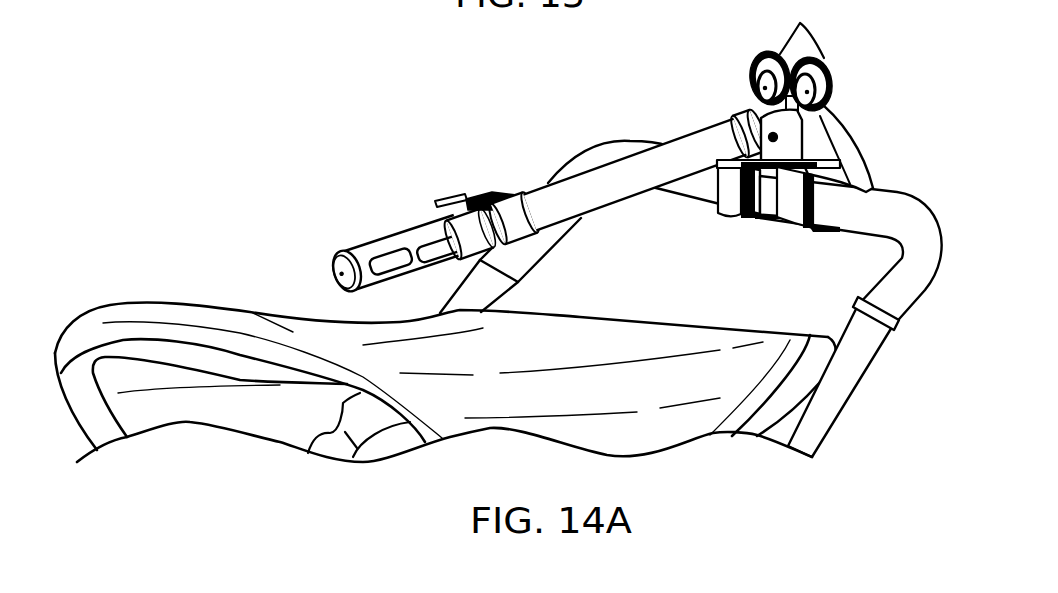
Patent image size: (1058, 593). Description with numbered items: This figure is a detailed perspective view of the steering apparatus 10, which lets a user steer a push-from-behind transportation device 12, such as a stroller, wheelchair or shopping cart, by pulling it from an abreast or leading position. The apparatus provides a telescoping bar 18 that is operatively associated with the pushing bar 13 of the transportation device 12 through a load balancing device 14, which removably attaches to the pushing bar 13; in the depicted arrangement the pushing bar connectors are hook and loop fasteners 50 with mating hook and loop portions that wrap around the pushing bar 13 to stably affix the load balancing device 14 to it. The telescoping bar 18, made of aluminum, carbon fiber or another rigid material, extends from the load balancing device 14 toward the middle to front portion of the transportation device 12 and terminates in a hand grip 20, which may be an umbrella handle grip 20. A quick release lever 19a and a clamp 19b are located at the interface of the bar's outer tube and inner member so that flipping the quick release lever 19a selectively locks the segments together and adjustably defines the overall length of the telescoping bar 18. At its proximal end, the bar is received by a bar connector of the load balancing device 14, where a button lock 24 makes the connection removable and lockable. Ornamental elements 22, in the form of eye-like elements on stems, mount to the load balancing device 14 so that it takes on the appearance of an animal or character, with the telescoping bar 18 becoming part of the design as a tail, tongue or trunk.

The steering apparatus 10 is at (335, 165).
The push-from-behind transportation device 12 is at (134, 286).
The pushing bar 13 is at (901, 205).
The load balancing device 14 is at (850, 150).
The telescoping bar 18 is at (608, 166).
The quick release lever 19a is at (436, 202).
The clamp 19b is at (512, 194).
The hand grip 20 is at (398, 236).
The ornamental elements 22 is at (800, 26).
The button lock 24 is at (770, 133).
The hook and loop fasteners 50 is at (795, 228).